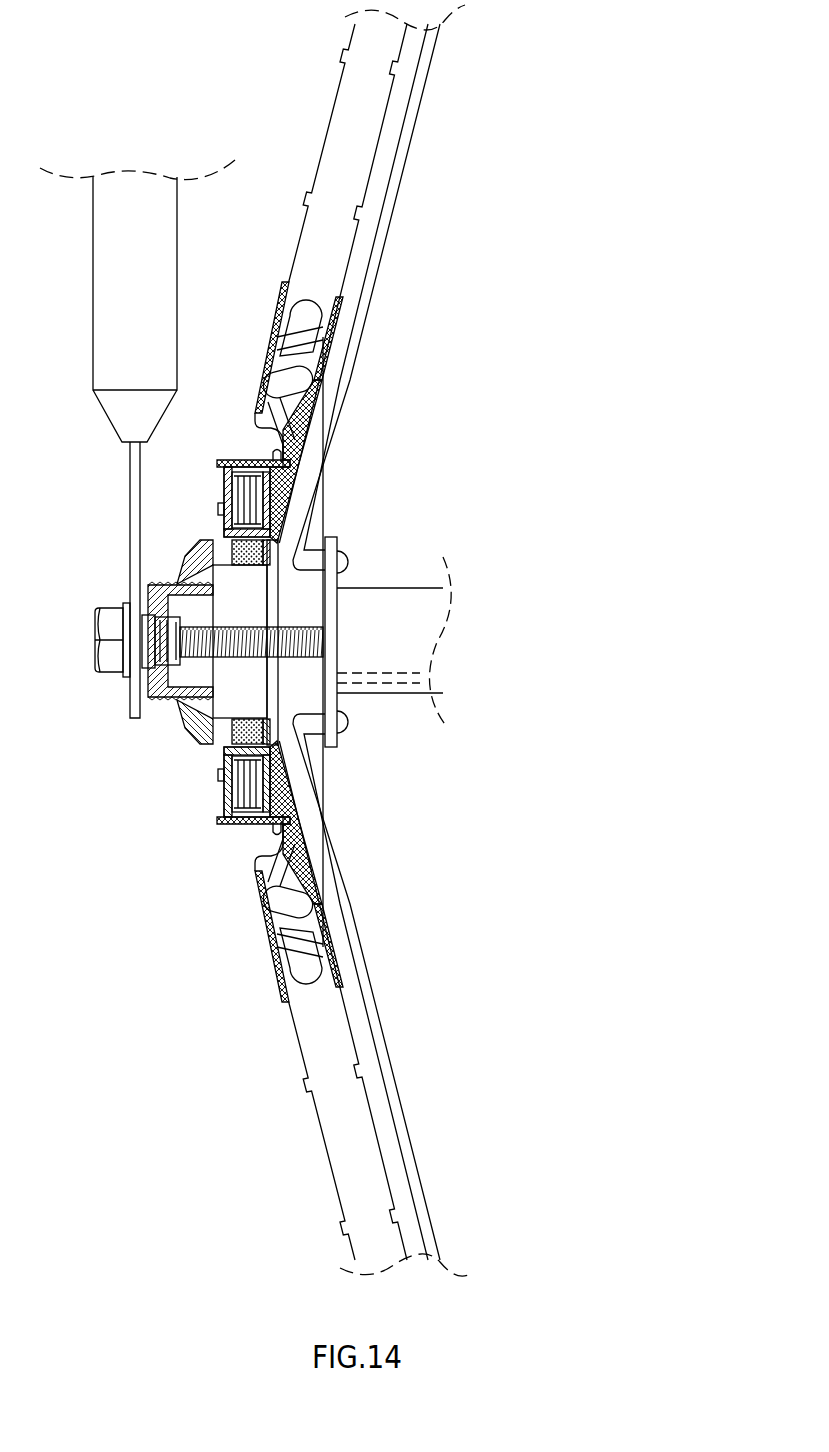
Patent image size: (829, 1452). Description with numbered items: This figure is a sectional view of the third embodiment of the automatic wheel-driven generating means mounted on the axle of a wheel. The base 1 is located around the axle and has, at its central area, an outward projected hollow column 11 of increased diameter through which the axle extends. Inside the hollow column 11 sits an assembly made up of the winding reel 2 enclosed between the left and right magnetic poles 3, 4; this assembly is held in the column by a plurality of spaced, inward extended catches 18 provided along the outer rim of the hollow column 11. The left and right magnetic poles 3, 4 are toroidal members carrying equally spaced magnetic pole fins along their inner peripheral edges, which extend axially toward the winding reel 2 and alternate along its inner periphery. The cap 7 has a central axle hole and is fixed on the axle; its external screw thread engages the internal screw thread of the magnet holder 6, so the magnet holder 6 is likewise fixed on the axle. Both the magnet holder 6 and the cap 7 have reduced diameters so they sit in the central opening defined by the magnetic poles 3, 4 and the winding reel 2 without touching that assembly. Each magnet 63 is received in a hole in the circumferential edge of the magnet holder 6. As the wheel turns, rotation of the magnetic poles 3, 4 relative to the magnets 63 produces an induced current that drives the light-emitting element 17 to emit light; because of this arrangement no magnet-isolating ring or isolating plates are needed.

The base 1 is at (302, 865).
The winding reel 2 is at (285, 510).
The left magnetic pole 3 is at (224, 487).
The right magnetic pole 4 is at (300, 462).
The magnet holder 6 is at (212, 712).
The cap 7 is at (150, 598).
The hollow column 11 is at (240, 822).
The light-emitting element 17 is at (306, 312).
The catches 18 is at (222, 808).
The magnet 63 is at (232, 548).